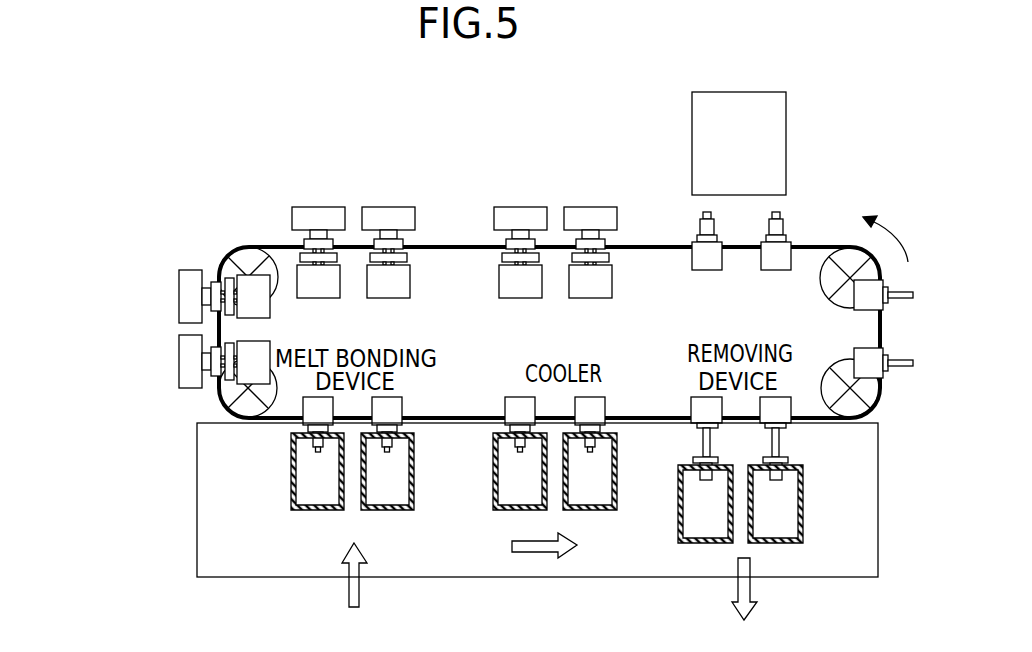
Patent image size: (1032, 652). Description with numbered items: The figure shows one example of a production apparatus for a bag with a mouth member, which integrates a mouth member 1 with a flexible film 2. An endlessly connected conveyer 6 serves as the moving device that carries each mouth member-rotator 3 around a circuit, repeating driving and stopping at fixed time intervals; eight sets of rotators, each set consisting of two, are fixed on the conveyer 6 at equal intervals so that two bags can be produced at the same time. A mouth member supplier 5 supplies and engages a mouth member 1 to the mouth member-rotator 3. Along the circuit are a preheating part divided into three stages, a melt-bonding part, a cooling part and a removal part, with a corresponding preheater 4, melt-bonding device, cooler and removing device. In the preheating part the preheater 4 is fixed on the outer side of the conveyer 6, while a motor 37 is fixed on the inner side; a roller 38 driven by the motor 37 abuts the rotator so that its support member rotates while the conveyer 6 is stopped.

The mouth member 1 is at (785, 229).
The flexible film 2 is at (291, 497).
The mouth member-rotator 3 is at (886, 285).
The preheater 4 is at (178, 270).
The mouth member supplier 5 is at (770, 120).
The conveyer 6 is at (456, 247).
The motor 37 is at (270, 317).
The roller 38 is at (610, 262).